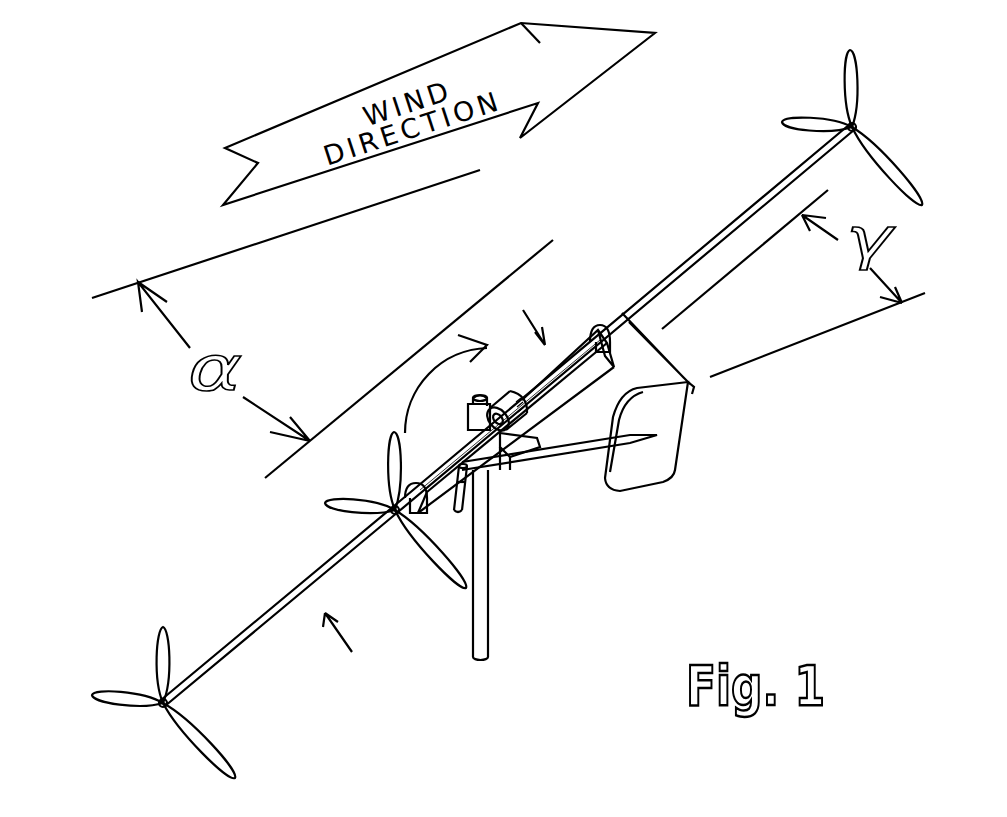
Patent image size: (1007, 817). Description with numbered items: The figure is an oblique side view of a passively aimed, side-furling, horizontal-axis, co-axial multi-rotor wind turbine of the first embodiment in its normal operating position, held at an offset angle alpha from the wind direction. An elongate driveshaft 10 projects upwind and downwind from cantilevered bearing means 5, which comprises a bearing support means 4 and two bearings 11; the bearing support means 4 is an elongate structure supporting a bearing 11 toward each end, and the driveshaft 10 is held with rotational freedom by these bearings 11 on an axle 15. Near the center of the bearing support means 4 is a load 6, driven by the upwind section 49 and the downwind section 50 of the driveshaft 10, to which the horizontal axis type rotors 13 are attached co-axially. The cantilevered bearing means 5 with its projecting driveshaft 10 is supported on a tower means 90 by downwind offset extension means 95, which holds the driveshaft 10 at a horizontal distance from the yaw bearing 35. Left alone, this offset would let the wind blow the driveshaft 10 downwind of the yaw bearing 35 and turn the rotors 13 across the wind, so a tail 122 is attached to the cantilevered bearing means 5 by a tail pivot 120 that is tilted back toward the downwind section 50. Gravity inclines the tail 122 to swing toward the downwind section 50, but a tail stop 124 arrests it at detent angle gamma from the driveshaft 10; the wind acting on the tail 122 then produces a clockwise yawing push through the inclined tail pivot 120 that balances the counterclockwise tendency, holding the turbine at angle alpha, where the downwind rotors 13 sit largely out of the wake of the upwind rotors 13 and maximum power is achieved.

The bearing support means 4 is at (584, 385).
The cantilevered bearing means 5 is at (475, 361).
The load 6 is at (505, 397).
The elongate driveshaft 10 is at (343, 646).
The bearing 11 is at (415, 483).
The horizontal axis type rotor 13 is at (337, 508).
The axle 15 is at (537, 382).
The horizontally rotatable azimuthal directional orientation means (yaw bearing) 35 is at (475, 405).
The upwind section of the driveshaft 49 is at (237, 648).
The downwind section of the driveshaft 50 is at (705, 243).
The tower means 90 is at (488, 571).
The downwind offset extension means 95 is at (482, 427).
The tail pivot 120 is at (457, 510).
The tail 122 is at (612, 485).
The tail stop 124 is at (532, 450).